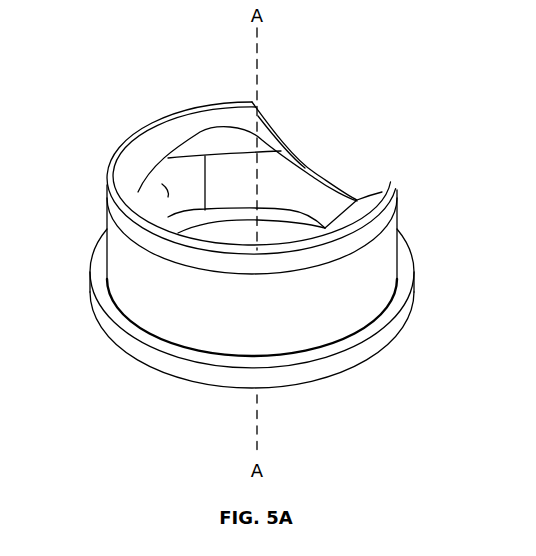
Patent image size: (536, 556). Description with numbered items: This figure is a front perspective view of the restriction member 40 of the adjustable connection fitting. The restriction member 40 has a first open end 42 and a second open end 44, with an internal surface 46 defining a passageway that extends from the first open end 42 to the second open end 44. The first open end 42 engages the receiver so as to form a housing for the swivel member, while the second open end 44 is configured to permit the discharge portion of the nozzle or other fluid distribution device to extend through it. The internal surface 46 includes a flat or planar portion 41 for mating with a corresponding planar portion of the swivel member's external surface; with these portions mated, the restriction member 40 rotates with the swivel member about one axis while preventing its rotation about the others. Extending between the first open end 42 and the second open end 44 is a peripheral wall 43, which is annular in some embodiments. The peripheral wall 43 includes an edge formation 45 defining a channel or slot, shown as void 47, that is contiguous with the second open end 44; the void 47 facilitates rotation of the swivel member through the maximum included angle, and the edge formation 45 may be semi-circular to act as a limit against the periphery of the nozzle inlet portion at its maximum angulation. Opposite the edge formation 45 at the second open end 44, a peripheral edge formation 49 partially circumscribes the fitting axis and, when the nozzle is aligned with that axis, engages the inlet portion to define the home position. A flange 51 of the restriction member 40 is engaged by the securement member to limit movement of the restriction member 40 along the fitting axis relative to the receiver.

The restriction member 40 is at (410, 158).
The planar portion 41 is at (167, 215).
The first open end 42 is at (311, 385).
The peripheral wall 43 is at (345, 323).
The second open end 44 is at (201, 107).
The edge formation 45 is at (268, 122).
The internal surface 46 is at (210, 158).
The void 47 is at (332, 150).
The peripheral edge formation 49 is at (138, 192).
The flange 51 is at (413, 303).